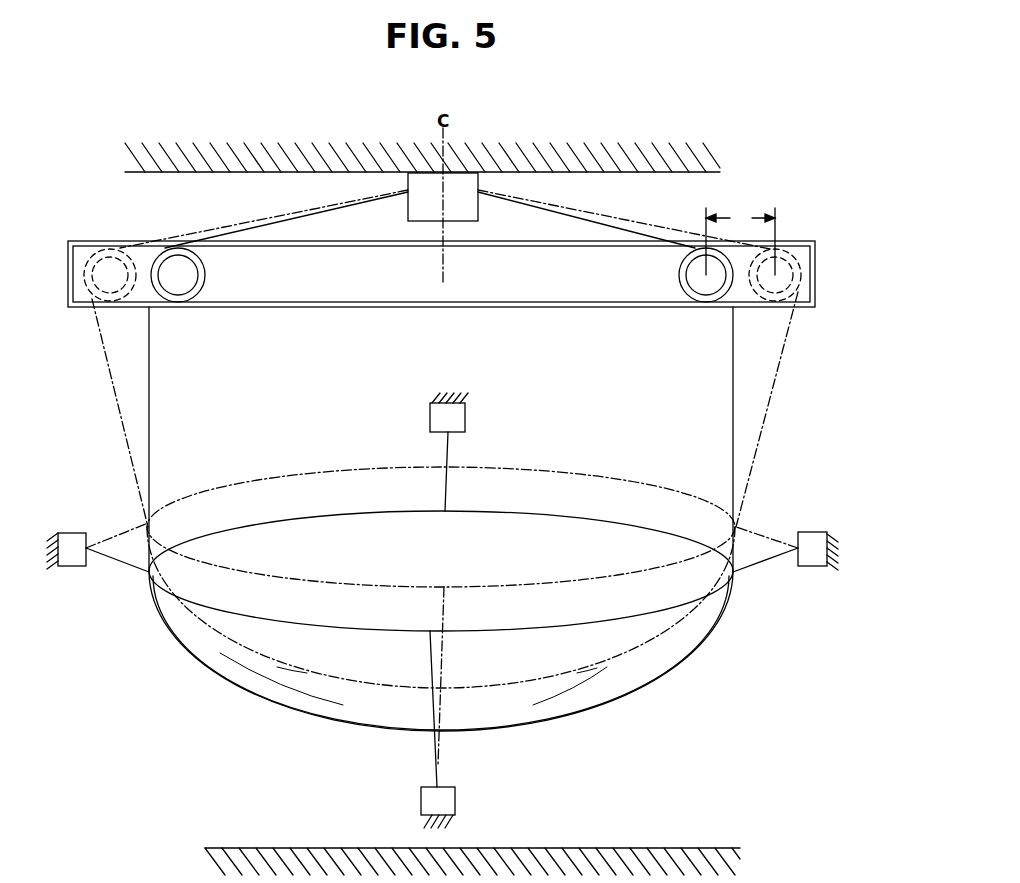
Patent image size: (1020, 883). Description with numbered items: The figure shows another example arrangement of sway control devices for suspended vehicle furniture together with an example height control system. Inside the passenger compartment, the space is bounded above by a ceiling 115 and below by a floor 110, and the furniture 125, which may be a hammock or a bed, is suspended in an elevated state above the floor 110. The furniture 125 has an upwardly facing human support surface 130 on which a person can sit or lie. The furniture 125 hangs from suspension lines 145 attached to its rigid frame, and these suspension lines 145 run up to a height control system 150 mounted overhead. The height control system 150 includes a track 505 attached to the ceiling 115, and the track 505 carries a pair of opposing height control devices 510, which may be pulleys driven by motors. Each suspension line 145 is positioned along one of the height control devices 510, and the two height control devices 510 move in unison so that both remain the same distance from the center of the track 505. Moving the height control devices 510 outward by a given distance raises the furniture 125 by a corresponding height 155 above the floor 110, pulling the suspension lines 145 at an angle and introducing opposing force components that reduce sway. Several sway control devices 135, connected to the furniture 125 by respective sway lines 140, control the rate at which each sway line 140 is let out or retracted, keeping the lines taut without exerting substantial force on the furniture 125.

The floor 110 is at (676, 848).
The ceiling 115 is at (612, 173).
The furniture 125 is at (690, 660).
The human support surface 130 is at (597, 713).
The sway control device 135 is at (417, 207).
The sway line 140 is at (110, 563).
The suspension line 145 is at (99, 340).
The height control system 150 is at (474, 244).
The height 155 is at (832, 852).
The track 505 is at (818, 272).
The height control device 510 is at (178, 275).